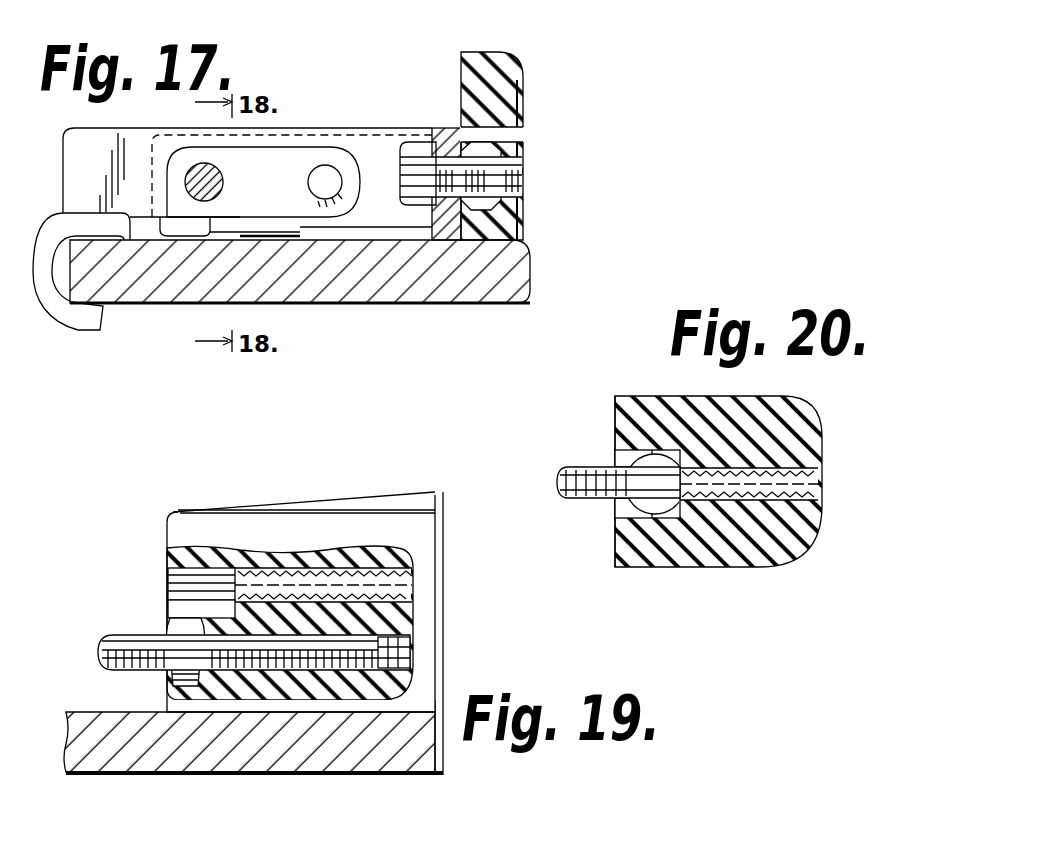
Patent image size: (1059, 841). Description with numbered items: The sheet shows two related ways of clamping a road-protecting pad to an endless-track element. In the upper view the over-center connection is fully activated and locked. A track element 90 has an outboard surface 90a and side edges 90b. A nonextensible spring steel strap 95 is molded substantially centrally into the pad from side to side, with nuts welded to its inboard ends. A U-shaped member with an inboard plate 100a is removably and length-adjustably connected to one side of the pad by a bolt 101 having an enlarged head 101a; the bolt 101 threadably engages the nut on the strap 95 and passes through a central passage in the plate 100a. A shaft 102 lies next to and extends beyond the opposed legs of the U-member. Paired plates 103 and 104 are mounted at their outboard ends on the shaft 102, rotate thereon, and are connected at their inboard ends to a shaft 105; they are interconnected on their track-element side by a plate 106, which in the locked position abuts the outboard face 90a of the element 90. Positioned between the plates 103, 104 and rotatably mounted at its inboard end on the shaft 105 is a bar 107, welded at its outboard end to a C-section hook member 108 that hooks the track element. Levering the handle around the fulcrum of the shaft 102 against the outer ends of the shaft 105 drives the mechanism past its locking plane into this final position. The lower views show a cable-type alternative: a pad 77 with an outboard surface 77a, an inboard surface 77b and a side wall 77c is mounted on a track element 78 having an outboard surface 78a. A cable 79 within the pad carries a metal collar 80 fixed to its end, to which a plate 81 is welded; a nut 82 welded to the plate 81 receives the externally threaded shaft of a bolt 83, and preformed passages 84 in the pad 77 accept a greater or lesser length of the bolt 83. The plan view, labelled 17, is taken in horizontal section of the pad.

In FIG. 20, the support leg 17 is at (821, 417).
In FIG. 19, the pad 77 is at (350, 485).
In FIG. 19, the outboard surface 77a is at (383, 493).
In FIG. 19, the inboard surface 77b is at (244, 713).
In FIG. 19, the side wall 77c is at (166, 527).
In FIG. 20, the side wall 77c is at (614, 405).
In FIG. 19, the track element 78 is at (178, 777).
In FIG. 19, the outboard surface 78a is at (96, 711).
In FIG. 19, the cable 79 is at (408, 578).
In FIG. 20, the cable 79 is at (808, 490).
In FIG. 19, the metal collar 80 is at (167, 582).
In FIG. 20, the metal collar 80 is at (626, 528).
In FIG. 19, the plate 81 is at (167, 612).
In FIG. 20, the plate 81 is at (622, 458).
In FIG. 19, the ball 82 is at (190, 625).
In FIG. 20, the ball 82 is at (630, 508).
In FIG. 19, the bolt 83 is at (146, 672).
In FIG. 20, the bolt 83 is at (582, 468).
In FIG. 19, the preformed passages 84 is at (395, 652).
In FIG. 17, the track element 90 is at (346, 306).
In FIG. 17, the outboard surface 90a is at (380, 235).
In FIG. 17, the side edges 90b is at (62, 314).
In FIG. 17, the spring steel strap 95 is at (513, 134).
In FIG. 17, the inboard plate 100a is at (444, 127).
In FIG. 17, the bolt 101 is at (524, 178).
In FIG. 17, the enlarged head 101a is at (412, 204).
In FIG. 17, the shaft 102 is at (214, 176).
In FIG. 17, the plate 103 is at (298, 128).
In FIG. 17, the plate 104 is at (342, 162).
In FIG. 17, the shaft 105 is at (313, 192).
In FIG. 17, the plate 106 is at (245, 217).
In FIG. 17, the bar 107 is at (90, 142).
In FIG. 17, the C-section hook member 108 is at (72, 325).